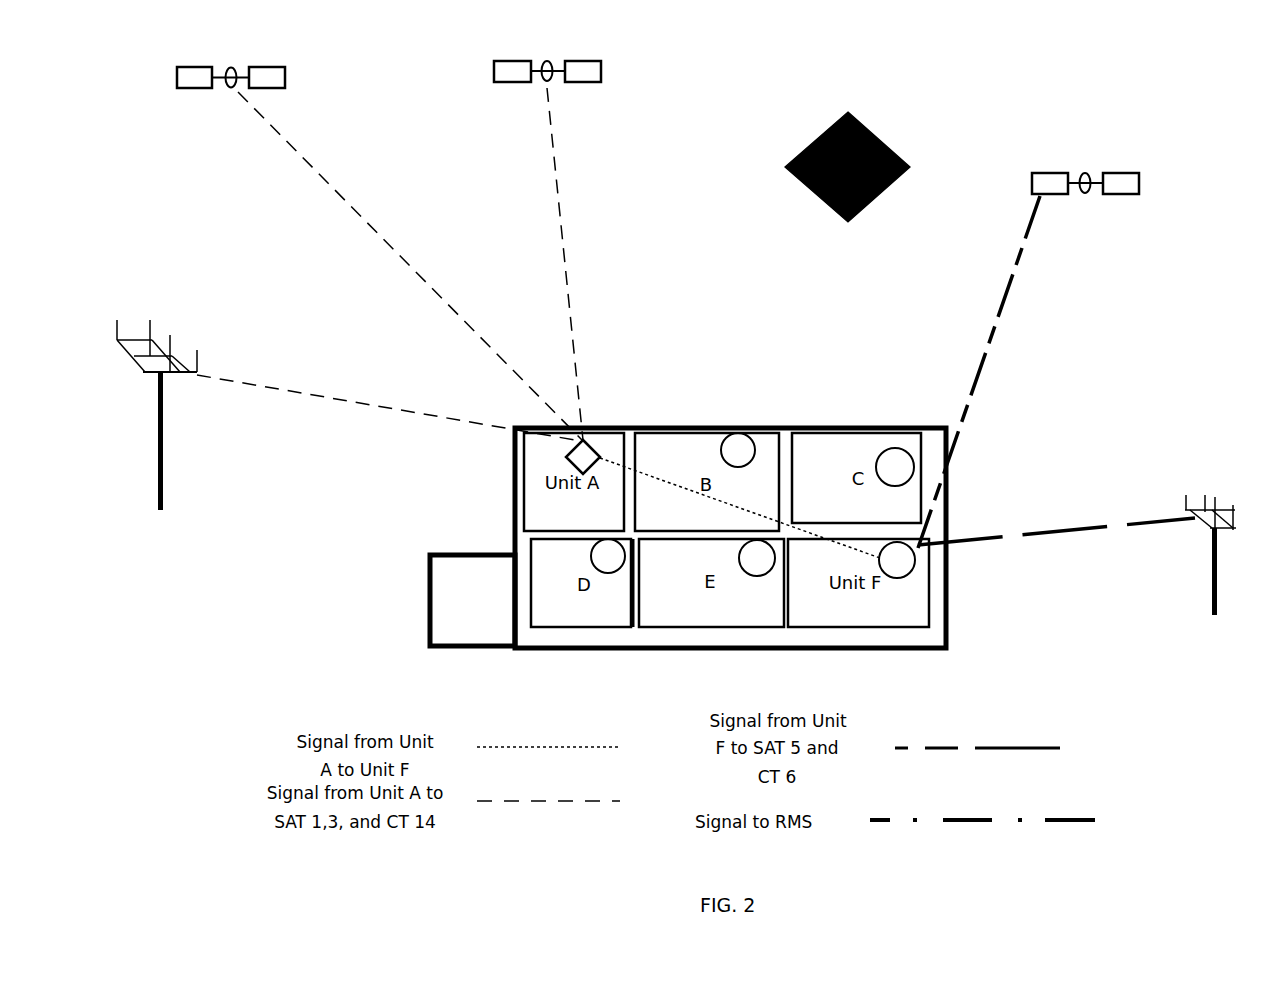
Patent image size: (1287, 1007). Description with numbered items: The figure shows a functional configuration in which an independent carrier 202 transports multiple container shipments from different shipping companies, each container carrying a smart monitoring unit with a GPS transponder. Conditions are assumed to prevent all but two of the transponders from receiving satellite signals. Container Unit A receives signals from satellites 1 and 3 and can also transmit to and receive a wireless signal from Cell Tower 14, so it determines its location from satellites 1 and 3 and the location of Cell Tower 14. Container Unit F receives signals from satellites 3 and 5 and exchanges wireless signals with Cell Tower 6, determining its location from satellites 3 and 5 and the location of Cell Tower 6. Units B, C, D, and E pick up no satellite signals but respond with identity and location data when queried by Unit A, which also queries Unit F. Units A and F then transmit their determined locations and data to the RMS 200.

The satellite 1 is at (238, 91).
The satellite 3 is at (594, 84).
The satellite 5 is at (1110, 196).
The cell tower 14 is at (165, 410).
The cell tower 6 is at (1208, 564).
The RMS 200 is at (883, 138).
The independent carrier 202 is at (428, 588).